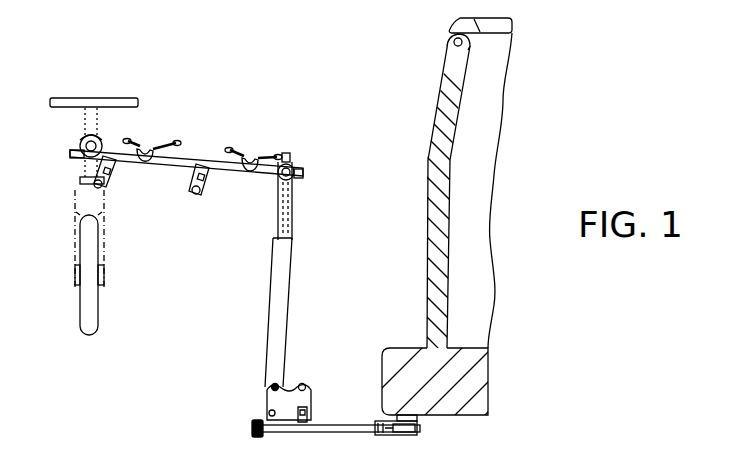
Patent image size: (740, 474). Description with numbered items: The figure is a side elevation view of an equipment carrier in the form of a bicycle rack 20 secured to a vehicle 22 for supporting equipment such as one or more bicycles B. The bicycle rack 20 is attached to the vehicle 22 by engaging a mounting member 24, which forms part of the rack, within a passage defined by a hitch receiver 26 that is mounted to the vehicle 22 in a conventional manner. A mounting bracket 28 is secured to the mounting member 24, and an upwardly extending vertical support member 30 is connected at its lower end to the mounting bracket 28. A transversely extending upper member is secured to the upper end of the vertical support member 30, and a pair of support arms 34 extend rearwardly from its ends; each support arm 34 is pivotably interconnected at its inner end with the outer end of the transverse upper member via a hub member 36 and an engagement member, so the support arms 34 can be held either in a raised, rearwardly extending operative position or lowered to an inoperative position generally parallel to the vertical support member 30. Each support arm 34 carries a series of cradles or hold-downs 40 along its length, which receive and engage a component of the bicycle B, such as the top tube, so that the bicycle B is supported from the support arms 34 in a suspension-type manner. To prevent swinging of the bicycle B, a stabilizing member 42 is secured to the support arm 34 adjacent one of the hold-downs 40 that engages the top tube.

The bicycle B is at (74, 222).
The bicycle rack 20 is at (184, 333).
The vehicle 22 is at (405, 100).
The mounting member 24 is at (291, 435).
The hitch receiver 26 is at (402, 437).
The mounting bracket 28 is at (300, 378).
The vertical support member 30 is at (293, 292).
The support arm 34 is at (259, 180).
The hub member 36 is at (525, 460).
The hold-downs 40 is at (242, 156).
The stabilizing member 42 is at (115, 184).